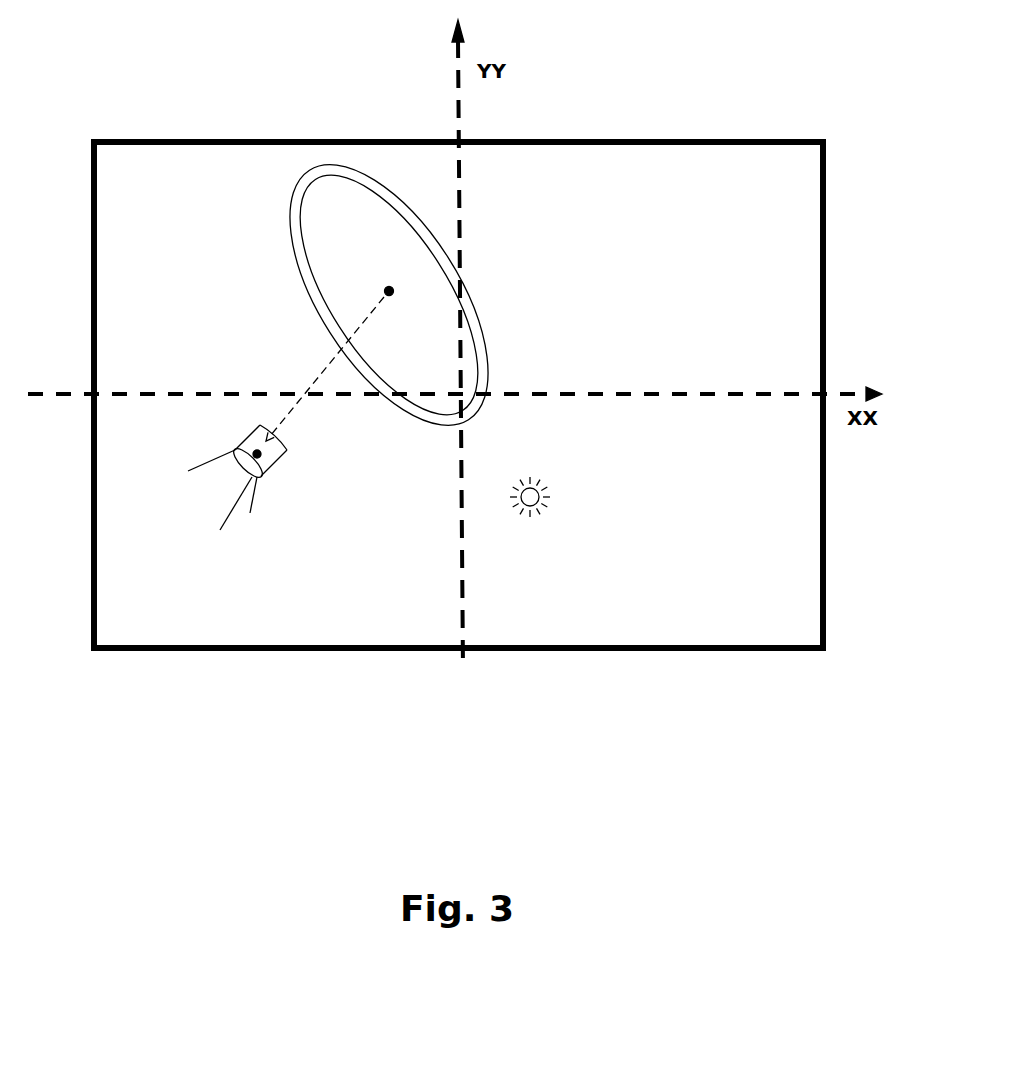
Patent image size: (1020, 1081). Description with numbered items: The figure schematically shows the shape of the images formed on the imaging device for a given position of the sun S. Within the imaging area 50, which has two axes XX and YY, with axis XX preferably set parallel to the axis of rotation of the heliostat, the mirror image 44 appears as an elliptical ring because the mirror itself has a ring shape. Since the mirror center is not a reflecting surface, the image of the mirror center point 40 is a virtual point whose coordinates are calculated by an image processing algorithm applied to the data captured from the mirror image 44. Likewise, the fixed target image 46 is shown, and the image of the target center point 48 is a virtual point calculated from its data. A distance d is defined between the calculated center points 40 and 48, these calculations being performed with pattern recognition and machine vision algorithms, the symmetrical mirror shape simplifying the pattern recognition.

The image of the mirror center point 40 is at (385, 288).
The mirror image 44 is at (305, 287).
The fixed target image 46 is at (237, 448).
The image of the target center point 48 is at (262, 456).
The imaging area 50 is at (605, 648).
The sun S is at (550, 485).
The distance d is at (325, 369).